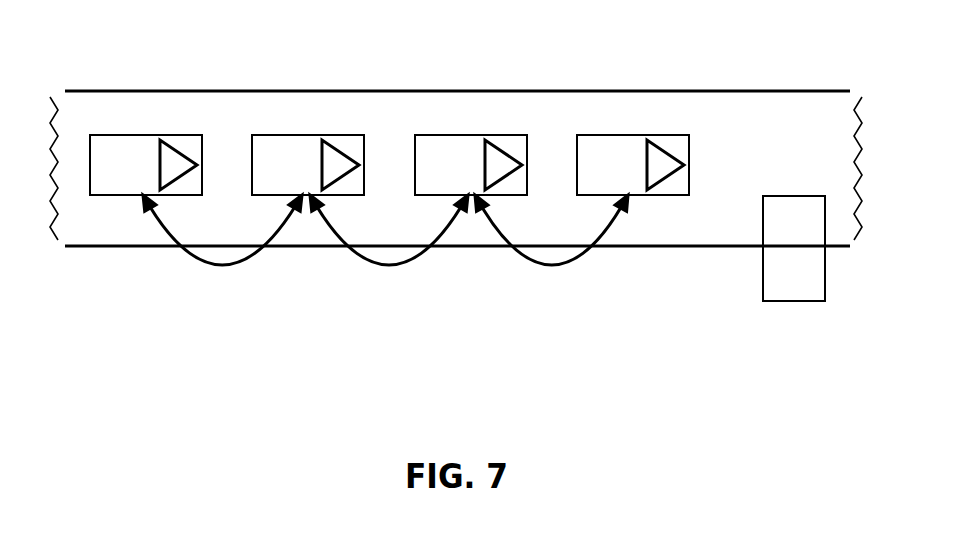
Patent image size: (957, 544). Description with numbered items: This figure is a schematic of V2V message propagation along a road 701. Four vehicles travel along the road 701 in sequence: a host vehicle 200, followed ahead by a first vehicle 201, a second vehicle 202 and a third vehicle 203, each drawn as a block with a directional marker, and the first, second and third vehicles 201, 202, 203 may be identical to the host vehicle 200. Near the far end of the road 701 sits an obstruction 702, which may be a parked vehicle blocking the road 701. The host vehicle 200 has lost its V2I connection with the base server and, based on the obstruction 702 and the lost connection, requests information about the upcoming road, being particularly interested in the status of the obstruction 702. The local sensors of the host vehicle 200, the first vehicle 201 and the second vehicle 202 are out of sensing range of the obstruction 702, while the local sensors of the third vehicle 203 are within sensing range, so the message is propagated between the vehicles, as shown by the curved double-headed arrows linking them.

The host vehicle 200 is at (130, 135).
The first vehicle 201 is at (292, 135).
The second vehicle 202 is at (453, 135).
The third vehicle 203 is at (615, 135).
The road 701 is at (802, 91).
The obstruction 702 is at (792, 307).